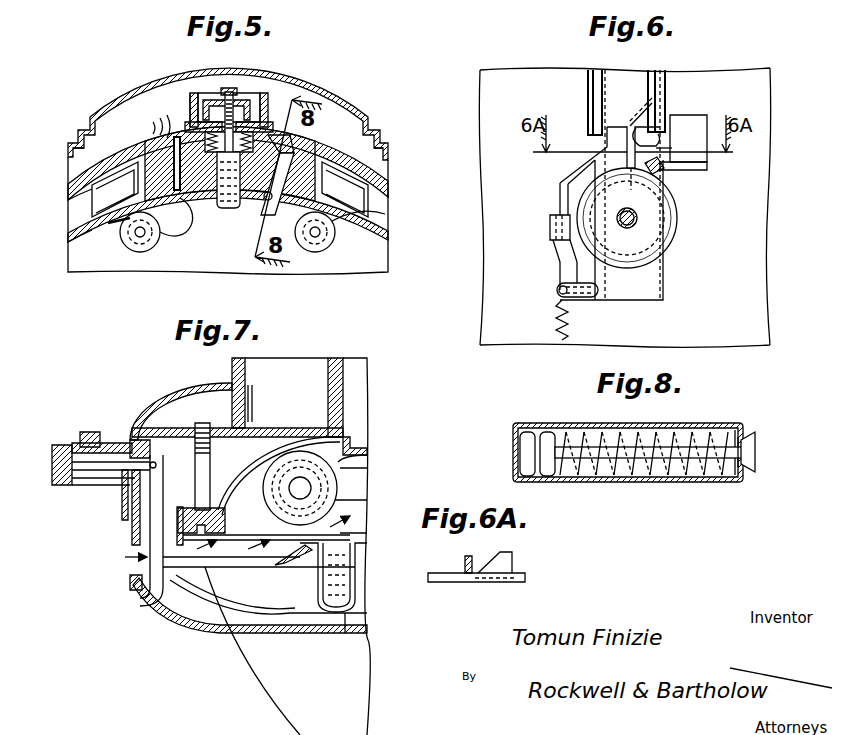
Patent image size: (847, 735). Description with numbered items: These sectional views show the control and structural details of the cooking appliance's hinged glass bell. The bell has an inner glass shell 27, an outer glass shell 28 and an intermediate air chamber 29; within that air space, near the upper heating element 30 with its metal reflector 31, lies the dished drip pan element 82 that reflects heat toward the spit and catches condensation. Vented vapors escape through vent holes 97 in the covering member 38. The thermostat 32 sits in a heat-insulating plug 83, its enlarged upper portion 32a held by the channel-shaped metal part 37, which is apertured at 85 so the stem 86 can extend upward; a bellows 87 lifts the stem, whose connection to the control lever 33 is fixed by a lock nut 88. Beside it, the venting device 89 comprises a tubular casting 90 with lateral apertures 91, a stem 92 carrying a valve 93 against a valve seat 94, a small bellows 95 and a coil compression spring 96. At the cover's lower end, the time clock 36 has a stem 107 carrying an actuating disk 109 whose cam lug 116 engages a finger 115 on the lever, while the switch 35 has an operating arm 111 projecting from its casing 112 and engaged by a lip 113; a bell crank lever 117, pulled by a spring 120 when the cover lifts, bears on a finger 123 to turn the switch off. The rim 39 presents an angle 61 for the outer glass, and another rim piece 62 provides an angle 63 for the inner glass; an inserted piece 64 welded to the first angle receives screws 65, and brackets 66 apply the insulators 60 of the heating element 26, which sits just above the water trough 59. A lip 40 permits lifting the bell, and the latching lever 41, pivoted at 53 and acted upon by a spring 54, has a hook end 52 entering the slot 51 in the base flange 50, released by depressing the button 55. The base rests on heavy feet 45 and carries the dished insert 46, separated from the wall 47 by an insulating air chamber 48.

In FIG. 7, the heating element 26 is at (306, 489).
In FIG. 5, the inner glass shell 27 is at (70, 238).
In FIG. 7, the inner glass shell 27 is at (336, 364).
In FIG. 5, the outer glass shell 28 is at (68, 189).
In FIG. 7, the outer glass shell 28 is at (242, 364).
In FIG. 5, the intermediate air chamber 29 is at (72, 214).
In FIG. 7, the intermediate air chamber 29 is at (295, 380).
In FIG. 5, the heating element 30 is at (140, 237).
In FIG. 5, the metal reflector 31 is at (112, 226).
In FIG. 5, the thermostat 32 is at (228, 210).
In FIG. 5, the enlarged upper portion 32a is at (193, 130).
In FIG. 5, the control lever 33 is at (204, 94).
In FIG. 6, the control lever 33 is at (636, 84).
In FIG. 6, the control switch 35 is at (707, 168).
In FIG. 6, the timer 36 is at (670, 262).
In FIG. 5, the metal part 37 is at (193, 92).
In FIG. 6, the metal part 37 is at (590, 85).
In FIG. 5, the covering member 38 is at (112, 117).
In FIG. 7, the metal rim 39 is at (170, 396).
In FIG. 7, the lip 40 is at (62, 445).
In FIG. 7, the latching lever 41 is at (133, 516).
In FIG. 7, the heavy feet 45 is at (262, 690).
In FIG. 7, the insert 46 is at (262, 632).
In FIG. 7, the wall 47 is at (308, 626).
In FIG. 7, the air chamber 48 is at (345, 620).
In FIG. 7, the inwardly extending flange 50 is at (188, 572).
In FIG. 7, the slot 51 is at (150, 600).
In FIG. 7, the hook end 52 is at (128, 586).
In FIG. 7, the pivot 53 is at (160, 464).
In FIG. 7, the spring 54 is at (110, 480).
In FIG. 7, the button 55 is at (90, 432).
In FIG. 7, the trough 59 is at (318, 580).
In FIG. 7, the insulators 60 is at (352, 508).
In FIG. 7, the angle 61 is at (251, 426).
In FIG. 7, the rim piece 62 is at (245, 492).
In FIG. 7, the angle 63 is at (352, 426).
In FIG. 7, the inserted piece 64 is at (294, 434).
In FIG. 7, the screws 65 is at (204, 466).
In FIG. 7, the brackets 66 is at (350, 460).
In FIG. 5, the drip pan element 82 is at (112, 200).
In FIG. 5, the plug 83 is at (203, 190).
In FIG. 5, the aperture 85 is at (250, 126).
In FIG. 5, the stem 86 is at (236, 130).
In FIG. 5, the bellows 87 is at (280, 100).
In FIG. 5, the lock nut 88 is at (236, 100).
In FIG. 5, the venting device 89 is at (292, 165).
In FIG. 8, the venting device 89 is at (672, 483).
In FIG. 8, the tubular casting 90 is at (731, 432).
In FIG. 5, the lateral apertures 91 is at (263, 200).
In FIG. 8, the lateral apertures 91 is at (548, 432).
In FIG. 8, the stem 92 is at (660, 450).
In FIG. 8, the valve 93 is at (757, 452).
In FIG. 8, the valve seat 94 is at (742, 438).
In FIG. 8, the small bellows 95 is at (527, 432).
In FIG. 8, the coil compression spring 96 is at (590, 440).
In FIG. 5, the vent holes 97 is at (86, 134).
In FIG. 6, the stem 107 is at (640, 218).
In FIG. 6, the actuating disk 109 is at (655, 240).
In FIG. 6, the operating arm 111 is at (660, 130).
In FIG. 6, the box-like casing 112 is at (690, 130).
In FIG. 6, the lip 113 is at (658, 142).
In FIG. 6, the finger 115 is at (600, 156).
In FIG. 6, the cam lug 116 is at (660, 170).
In FIG. 6, the bell crank lever 117 is at (560, 263).
In FIG. 6, the spring 120 is at (557, 324).
In FIG. 6, the finger 123 is at (560, 198).